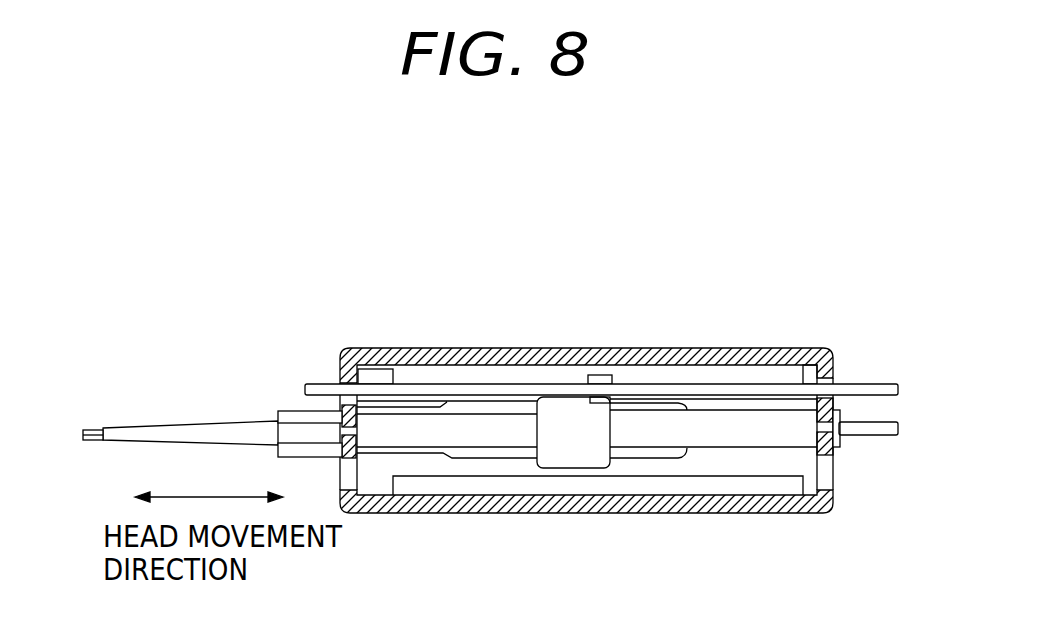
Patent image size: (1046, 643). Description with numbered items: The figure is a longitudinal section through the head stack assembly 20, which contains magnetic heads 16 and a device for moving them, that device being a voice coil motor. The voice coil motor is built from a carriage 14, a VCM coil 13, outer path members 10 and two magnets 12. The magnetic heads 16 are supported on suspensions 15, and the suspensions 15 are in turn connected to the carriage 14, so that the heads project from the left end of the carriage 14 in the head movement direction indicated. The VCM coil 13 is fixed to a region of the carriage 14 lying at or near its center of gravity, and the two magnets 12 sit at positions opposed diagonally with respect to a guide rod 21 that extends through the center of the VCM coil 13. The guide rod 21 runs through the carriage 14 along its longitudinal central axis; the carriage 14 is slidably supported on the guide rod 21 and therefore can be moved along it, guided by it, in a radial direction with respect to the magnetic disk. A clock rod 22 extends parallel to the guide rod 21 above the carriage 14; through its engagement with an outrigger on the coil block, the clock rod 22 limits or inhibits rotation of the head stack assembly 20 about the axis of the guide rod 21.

The outer path member 10 is at (700, 348).
The magnet 12 is at (790, 373).
The VCM coil 13 is at (580, 453).
The carriage 14 is at (478, 453).
The suspension 15 is at (205, 428).
The magnetic head 16 is at (92, 428).
The head stack assembly 20 is at (580, 296).
The guide rod 21 is at (883, 433).
The clock rod 22 is at (882, 384).